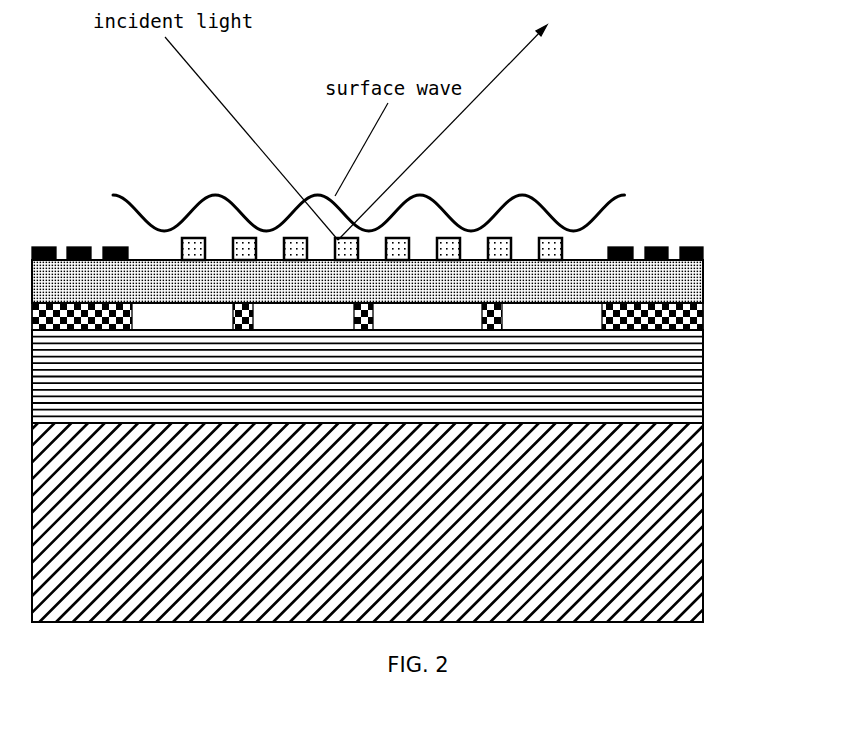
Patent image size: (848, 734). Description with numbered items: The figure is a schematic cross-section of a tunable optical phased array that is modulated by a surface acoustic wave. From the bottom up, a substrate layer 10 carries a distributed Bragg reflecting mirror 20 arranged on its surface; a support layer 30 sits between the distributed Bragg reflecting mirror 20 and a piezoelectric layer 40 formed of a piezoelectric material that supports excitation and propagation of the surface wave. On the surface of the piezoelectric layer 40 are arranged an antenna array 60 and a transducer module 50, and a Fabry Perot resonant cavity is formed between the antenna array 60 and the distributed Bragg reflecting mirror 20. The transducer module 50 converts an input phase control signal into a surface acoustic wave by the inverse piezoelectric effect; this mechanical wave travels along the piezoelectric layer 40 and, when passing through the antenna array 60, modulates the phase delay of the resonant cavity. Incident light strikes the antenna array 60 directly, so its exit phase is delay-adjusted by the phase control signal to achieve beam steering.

The substrate layer 10 is at (675, 565).
The distributed Bragg reflecting mirror 20 is at (675, 408).
The support layer 30 is at (685, 323).
The piezoelectric layer 40 is at (673, 288).
The transducer module 50 is at (661, 246).
The antenna array 60 is at (549, 238).